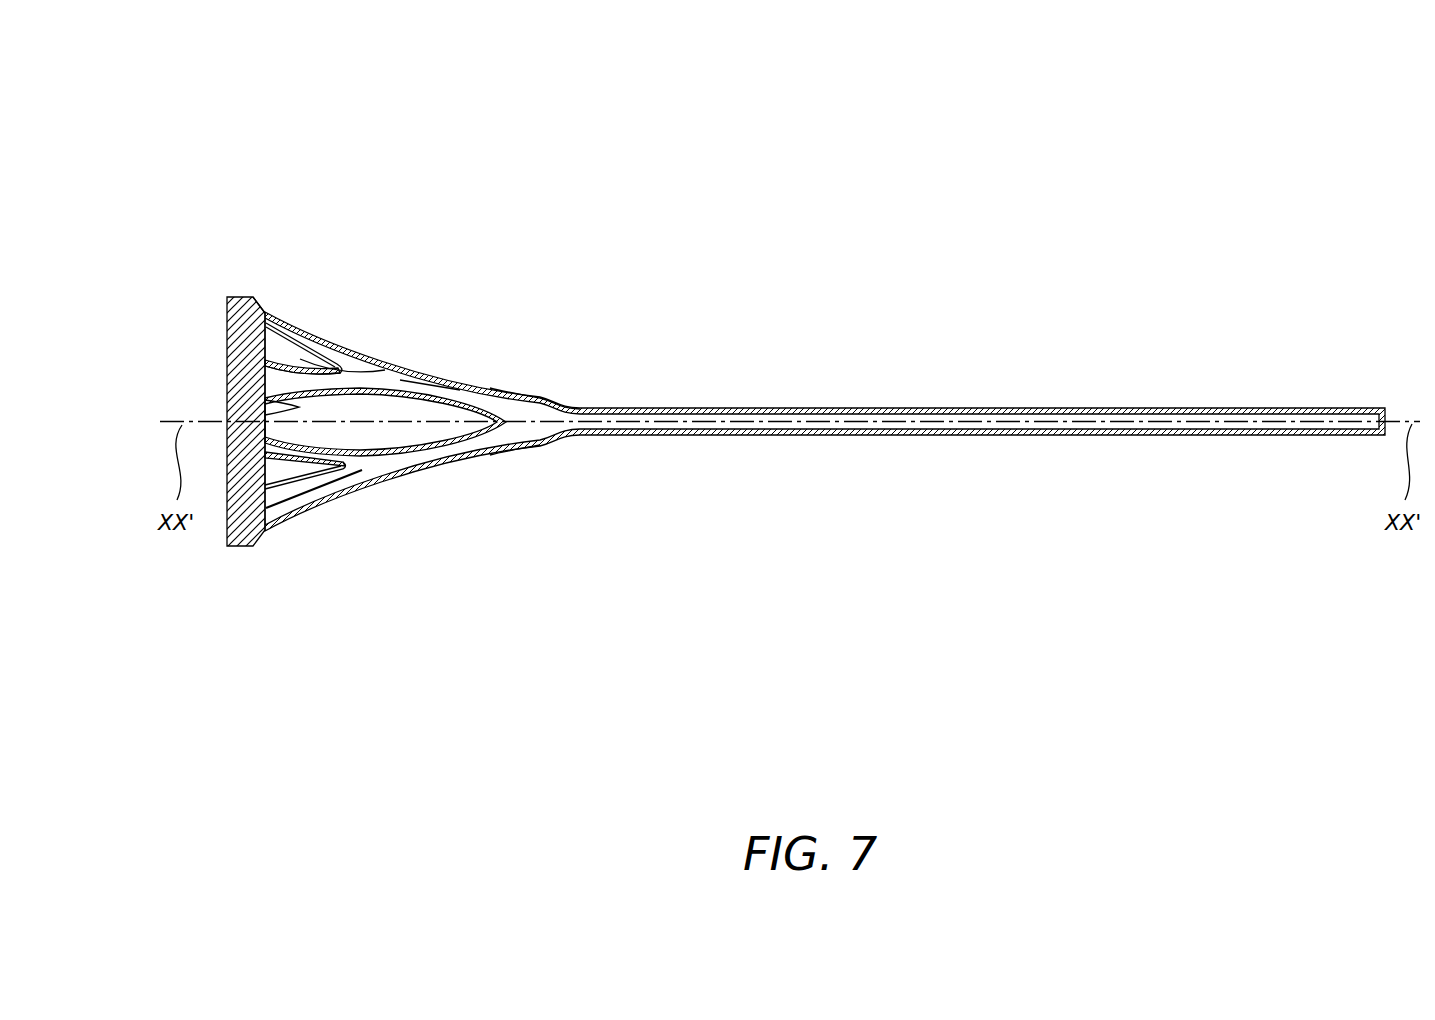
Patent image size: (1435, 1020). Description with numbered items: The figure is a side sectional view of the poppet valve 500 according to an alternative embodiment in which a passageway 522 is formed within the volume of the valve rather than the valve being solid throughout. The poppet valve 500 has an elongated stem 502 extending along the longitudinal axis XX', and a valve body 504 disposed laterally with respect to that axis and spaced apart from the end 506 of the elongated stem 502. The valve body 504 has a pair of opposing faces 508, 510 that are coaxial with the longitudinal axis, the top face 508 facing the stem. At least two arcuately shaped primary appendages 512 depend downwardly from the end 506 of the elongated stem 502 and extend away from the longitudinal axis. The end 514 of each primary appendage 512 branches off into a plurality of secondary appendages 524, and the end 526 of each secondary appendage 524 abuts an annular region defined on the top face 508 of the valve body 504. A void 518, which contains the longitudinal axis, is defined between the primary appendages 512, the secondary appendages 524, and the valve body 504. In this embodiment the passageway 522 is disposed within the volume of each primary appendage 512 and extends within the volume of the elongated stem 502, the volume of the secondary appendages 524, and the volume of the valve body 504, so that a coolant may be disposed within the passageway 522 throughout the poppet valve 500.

The poppet valve 500 is at (1322, 97).
The elongated stem 502 is at (1275, 407).
The valve body 504 is at (240, 557).
The end of the elongated stem 506 is at (588, 407).
The top face of the valve body 508 is at (276, 402).
The opposing face of the valve body 510 is at (226, 340).
The primary appendage 512 is at (492, 386).
The end of the primary appendage 514 is at (426, 382).
The void 518 is at (412, 443).
The passageway 522 is at (388, 378).
The secondary appendage 524 is at (316, 336).
The end of the secondary appendage 526 is at (277, 311).